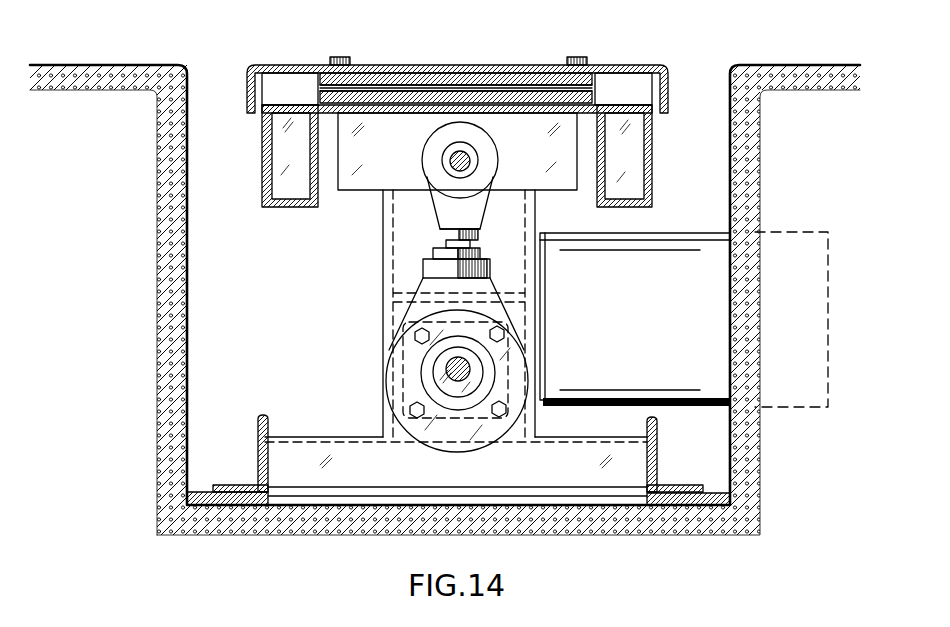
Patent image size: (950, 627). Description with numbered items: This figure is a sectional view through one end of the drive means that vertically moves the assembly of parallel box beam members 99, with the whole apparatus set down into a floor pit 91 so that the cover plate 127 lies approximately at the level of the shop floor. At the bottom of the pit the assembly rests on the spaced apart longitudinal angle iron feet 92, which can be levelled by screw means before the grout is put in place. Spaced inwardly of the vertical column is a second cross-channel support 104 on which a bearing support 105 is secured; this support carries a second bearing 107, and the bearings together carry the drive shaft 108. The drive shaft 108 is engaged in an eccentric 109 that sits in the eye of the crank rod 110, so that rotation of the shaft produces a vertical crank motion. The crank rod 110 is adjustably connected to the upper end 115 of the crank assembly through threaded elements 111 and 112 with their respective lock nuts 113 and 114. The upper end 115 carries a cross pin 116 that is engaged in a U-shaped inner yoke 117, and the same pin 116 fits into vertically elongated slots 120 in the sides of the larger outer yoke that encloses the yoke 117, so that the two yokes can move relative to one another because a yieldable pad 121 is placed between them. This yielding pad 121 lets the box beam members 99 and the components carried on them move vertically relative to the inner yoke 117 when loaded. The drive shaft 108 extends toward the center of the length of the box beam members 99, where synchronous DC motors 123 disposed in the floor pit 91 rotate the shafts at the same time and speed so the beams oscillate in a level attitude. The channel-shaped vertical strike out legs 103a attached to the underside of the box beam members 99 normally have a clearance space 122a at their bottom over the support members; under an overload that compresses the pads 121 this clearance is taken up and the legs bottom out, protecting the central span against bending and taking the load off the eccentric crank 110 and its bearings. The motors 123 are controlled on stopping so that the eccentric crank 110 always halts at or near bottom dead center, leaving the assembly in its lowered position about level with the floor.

The floor pit 91 is at (730, 205).
The longitudinal angle iron feet 92 is at (257, 450).
The box beam members 99 is at (262, 160).
The channel-shaped vertical strike out legs 103a is at (392, 252).
The second cross-channel support 104 is at (575, 482).
The bearing support 105 is at (392, 308).
The second bearing 107 is at (520, 345).
The drive shaft 108 is at (470, 365).
The eccentric 109 is at (432, 384).
The crank rod 110 is at (528, 307).
The threaded element 111 is at (483, 253).
The threaded element 112 is at (447, 242).
The lock nut 113 is at (488, 268).
The lock nut 114 is at (481, 233).
The upper end of the crank assembly 115 is at (493, 152).
The cross pin 116 is at (470, 165).
The yoke 117 is at (403, 115).
The vertically elongated slots 120 is at (422, 162).
The yieldable pad 121 is at (385, 92).
The clearance space 122a is at (382, 432).
The DC motors 123 is at (683, 315).
The cover plate 127 is at (497, 66).